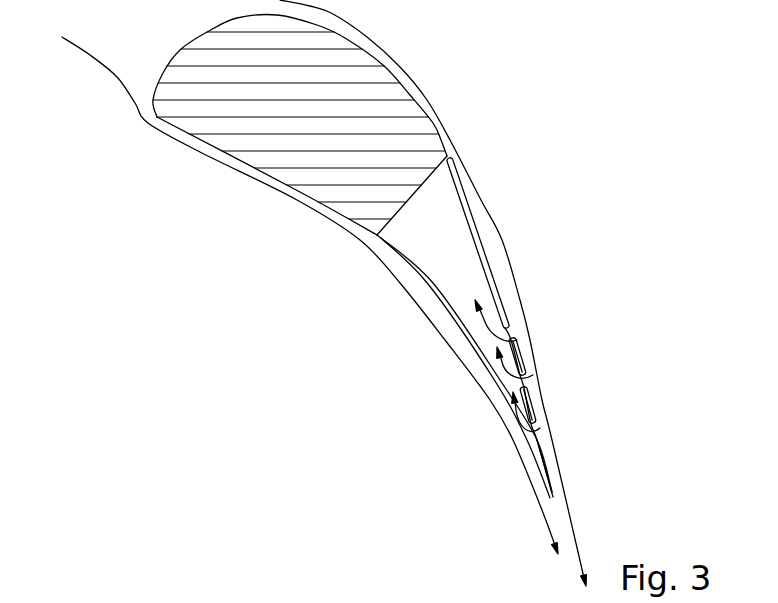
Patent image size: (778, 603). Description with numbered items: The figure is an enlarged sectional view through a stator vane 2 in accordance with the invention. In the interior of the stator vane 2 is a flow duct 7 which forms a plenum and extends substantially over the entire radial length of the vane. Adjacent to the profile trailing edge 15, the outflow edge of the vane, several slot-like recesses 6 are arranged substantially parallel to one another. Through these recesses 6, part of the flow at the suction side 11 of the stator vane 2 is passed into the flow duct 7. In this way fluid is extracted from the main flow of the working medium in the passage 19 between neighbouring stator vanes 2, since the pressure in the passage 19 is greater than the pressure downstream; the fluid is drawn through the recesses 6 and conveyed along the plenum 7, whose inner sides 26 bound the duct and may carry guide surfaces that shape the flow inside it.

The stator vane 2 is at (262, 142).
The slot-like recesses 6 is at (520, 332).
The flow duct 7 is at (470, 263).
The suction side 11 is at (390, 71).
The profile trailing edge 15 is at (547, 465).
The passage 19 is at (443, 123).
The inner sides 26 is at (462, 205).